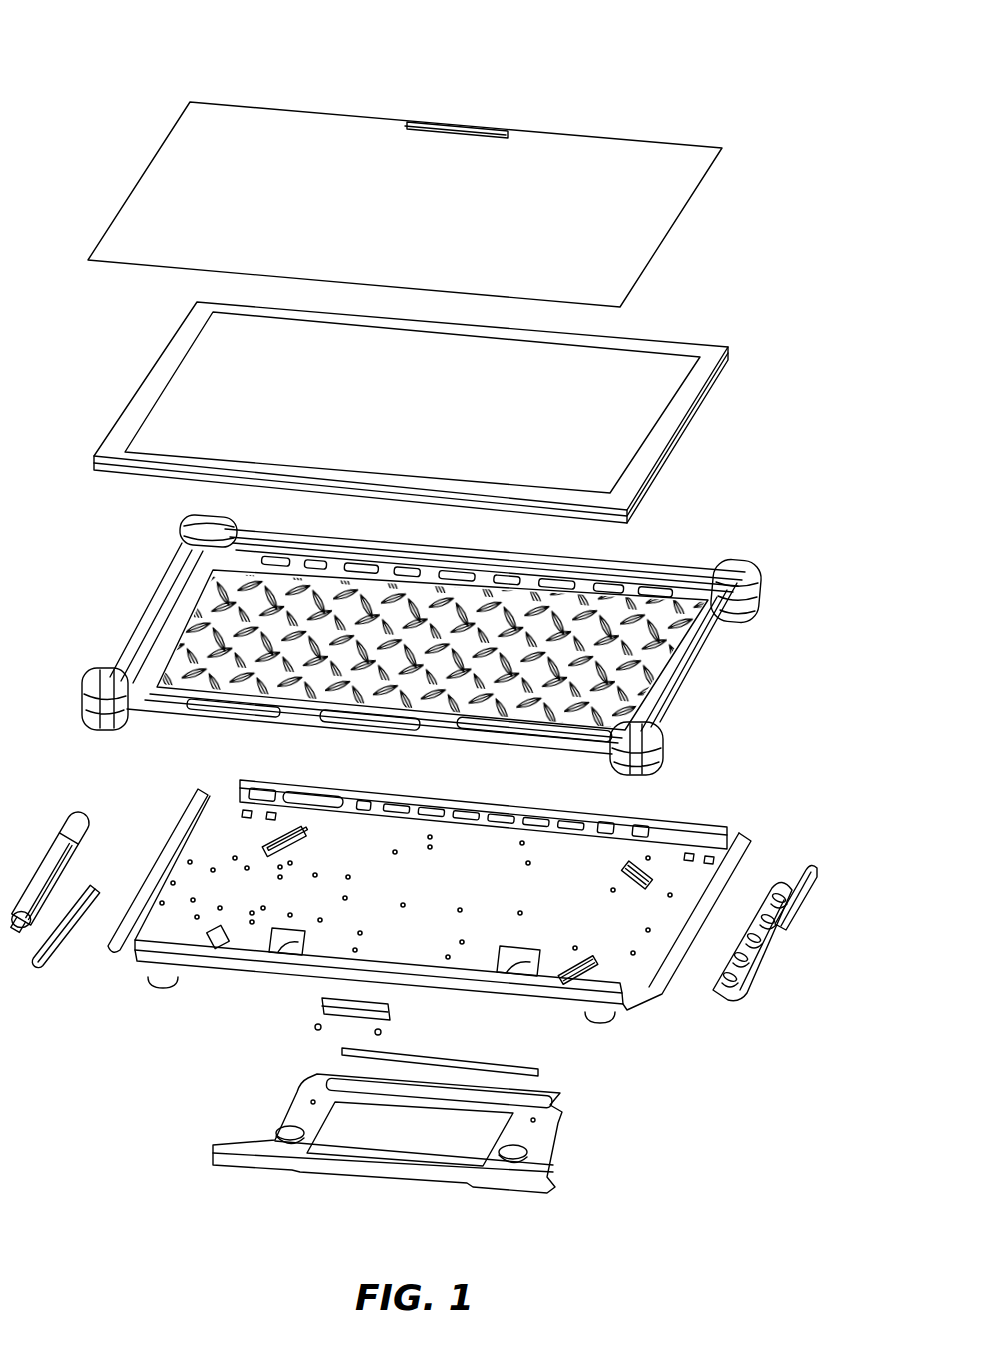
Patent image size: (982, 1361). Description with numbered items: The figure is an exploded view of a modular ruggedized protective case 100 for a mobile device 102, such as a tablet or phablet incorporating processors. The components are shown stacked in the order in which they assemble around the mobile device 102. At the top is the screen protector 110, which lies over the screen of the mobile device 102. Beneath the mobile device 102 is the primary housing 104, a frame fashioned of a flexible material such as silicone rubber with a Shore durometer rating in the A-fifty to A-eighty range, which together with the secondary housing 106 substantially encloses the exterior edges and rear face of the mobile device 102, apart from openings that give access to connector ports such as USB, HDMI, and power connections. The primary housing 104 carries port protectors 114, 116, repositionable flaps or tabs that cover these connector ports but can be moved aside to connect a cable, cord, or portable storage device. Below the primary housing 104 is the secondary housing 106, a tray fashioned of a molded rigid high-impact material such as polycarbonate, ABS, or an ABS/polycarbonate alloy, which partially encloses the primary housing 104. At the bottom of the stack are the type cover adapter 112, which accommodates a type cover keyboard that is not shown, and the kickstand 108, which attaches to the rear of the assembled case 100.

The modular ruggedized protective case 100 is at (83, 67).
The screen protector 110 is at (593, 150).
The mobile device 102 is at (687, 398).
The primary housing 104 is at (690, 680).
The secondary housing 106 is at (230, 890).
The port protector 114 is at (803, 892).
The port protector 116 is at (758, 958).
The type cover adapter 112 is at (323, 1018).
The kickstand 108 is at (232, 1155).